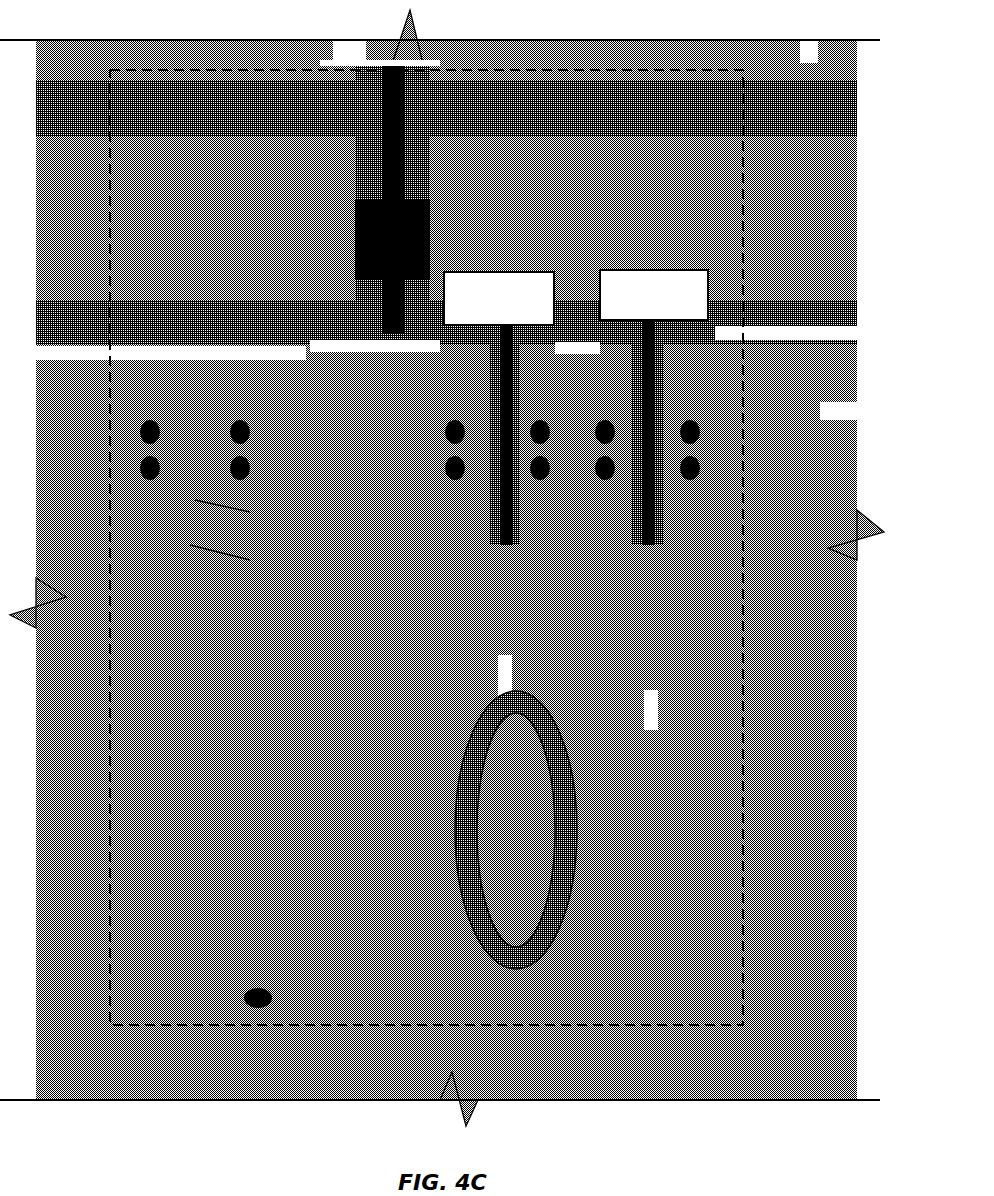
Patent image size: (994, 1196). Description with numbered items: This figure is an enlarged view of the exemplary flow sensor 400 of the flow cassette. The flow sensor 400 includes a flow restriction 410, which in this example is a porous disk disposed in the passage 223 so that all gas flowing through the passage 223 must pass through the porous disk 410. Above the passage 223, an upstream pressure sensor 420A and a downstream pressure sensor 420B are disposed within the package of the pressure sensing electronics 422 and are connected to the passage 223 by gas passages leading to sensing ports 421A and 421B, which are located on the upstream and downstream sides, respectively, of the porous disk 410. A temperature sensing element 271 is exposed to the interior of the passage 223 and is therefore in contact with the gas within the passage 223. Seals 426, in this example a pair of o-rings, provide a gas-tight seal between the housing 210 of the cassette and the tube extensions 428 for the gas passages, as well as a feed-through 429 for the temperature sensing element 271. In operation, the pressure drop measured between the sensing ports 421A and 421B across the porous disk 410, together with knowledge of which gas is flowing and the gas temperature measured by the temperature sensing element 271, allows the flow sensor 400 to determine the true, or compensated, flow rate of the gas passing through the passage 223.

The flow sensor 400 is at (580, 1025).
The flow restriction 410 is at (566, 893).
The upstream pressure sensor 420A is at (508, 272).
The downstream pressure sensor 420B is at (662, 268).
The sensing port 421A is at (491, 700).
The sensing port 421B is at (645, 742).
The pressure sensing electronics 422 is at (645, 142).
The seals 426 is at (548, 478).
The tube extensions 428 is at (518, 515).
The feed-through 429 is at (228, 506).
The temperature sensing element 271 is at (190, 542).
The body 210 is at (354, 545).
The passage 223 is at (800, 832).